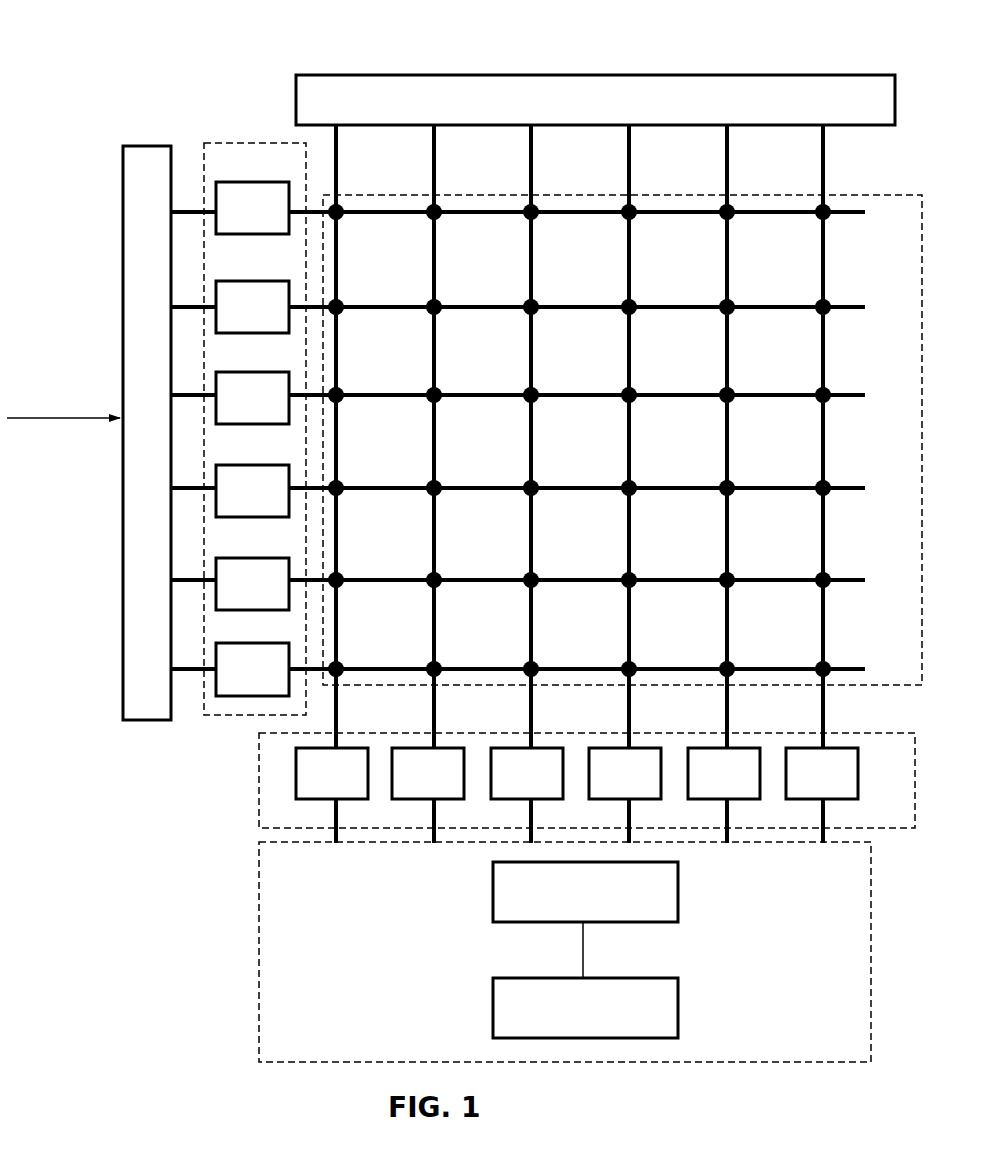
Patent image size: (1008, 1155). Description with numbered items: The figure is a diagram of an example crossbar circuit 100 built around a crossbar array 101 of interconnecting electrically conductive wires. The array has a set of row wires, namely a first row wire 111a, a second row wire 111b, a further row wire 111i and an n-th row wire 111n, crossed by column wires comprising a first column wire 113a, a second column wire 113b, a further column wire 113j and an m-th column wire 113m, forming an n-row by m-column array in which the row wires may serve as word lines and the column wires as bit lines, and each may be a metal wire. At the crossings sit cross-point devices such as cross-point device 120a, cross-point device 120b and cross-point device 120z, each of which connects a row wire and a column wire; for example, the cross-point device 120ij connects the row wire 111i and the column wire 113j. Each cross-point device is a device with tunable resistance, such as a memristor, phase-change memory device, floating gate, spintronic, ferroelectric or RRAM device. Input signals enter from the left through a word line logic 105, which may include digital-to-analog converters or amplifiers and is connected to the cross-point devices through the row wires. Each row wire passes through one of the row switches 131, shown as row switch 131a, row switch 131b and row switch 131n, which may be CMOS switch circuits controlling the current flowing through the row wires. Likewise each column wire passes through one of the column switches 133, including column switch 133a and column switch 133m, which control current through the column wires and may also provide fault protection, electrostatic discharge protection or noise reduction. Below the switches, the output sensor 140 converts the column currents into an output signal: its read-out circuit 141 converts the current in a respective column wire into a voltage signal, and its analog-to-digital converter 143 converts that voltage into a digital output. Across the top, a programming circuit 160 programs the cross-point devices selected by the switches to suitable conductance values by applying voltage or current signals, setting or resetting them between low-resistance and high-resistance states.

The crossbar circuit 100 is at (265, 77).
The word line logic 105 is at (163, 424).
The crossbar array 101 is at (911, 674).
The first row wire 111a is at (759, 221).
The second row wire 111b is at (759, 316).
The row wire 111i is at (759, 496).
The n-th row wire 111n is at (759, 678).
The first column wire 113a is at (341, 183).
The second column wire 113b is at (439, 183).
The column wire 113j is at (670, 166).
The m-th column wire 113m is at (862, 166).
The cross-point device 120a is at (341, 223).
The cross-point device 120b is at (344, 314).
The cross-point device 120ij is at (671, 462).
The cross-point device 120z is at (829, 681).
The row switches 131 is at (298, 172).
The row switch 131a is at (225, 240).
The row switch 131b is at (225, 337).
The row switch 131n is at (313, 640).
The column switches 133 is at (906, 817).
The column switch 133a is at (294, 782).
The column switch 133m is at (903, 763).
The output sensor 140 is at (862, 1052).
The read-out circuit 141 is at (601, 912).
The analog-to-digital converter 143 is at (626, 1019).
The programming circuit 160 is at (741, 110).